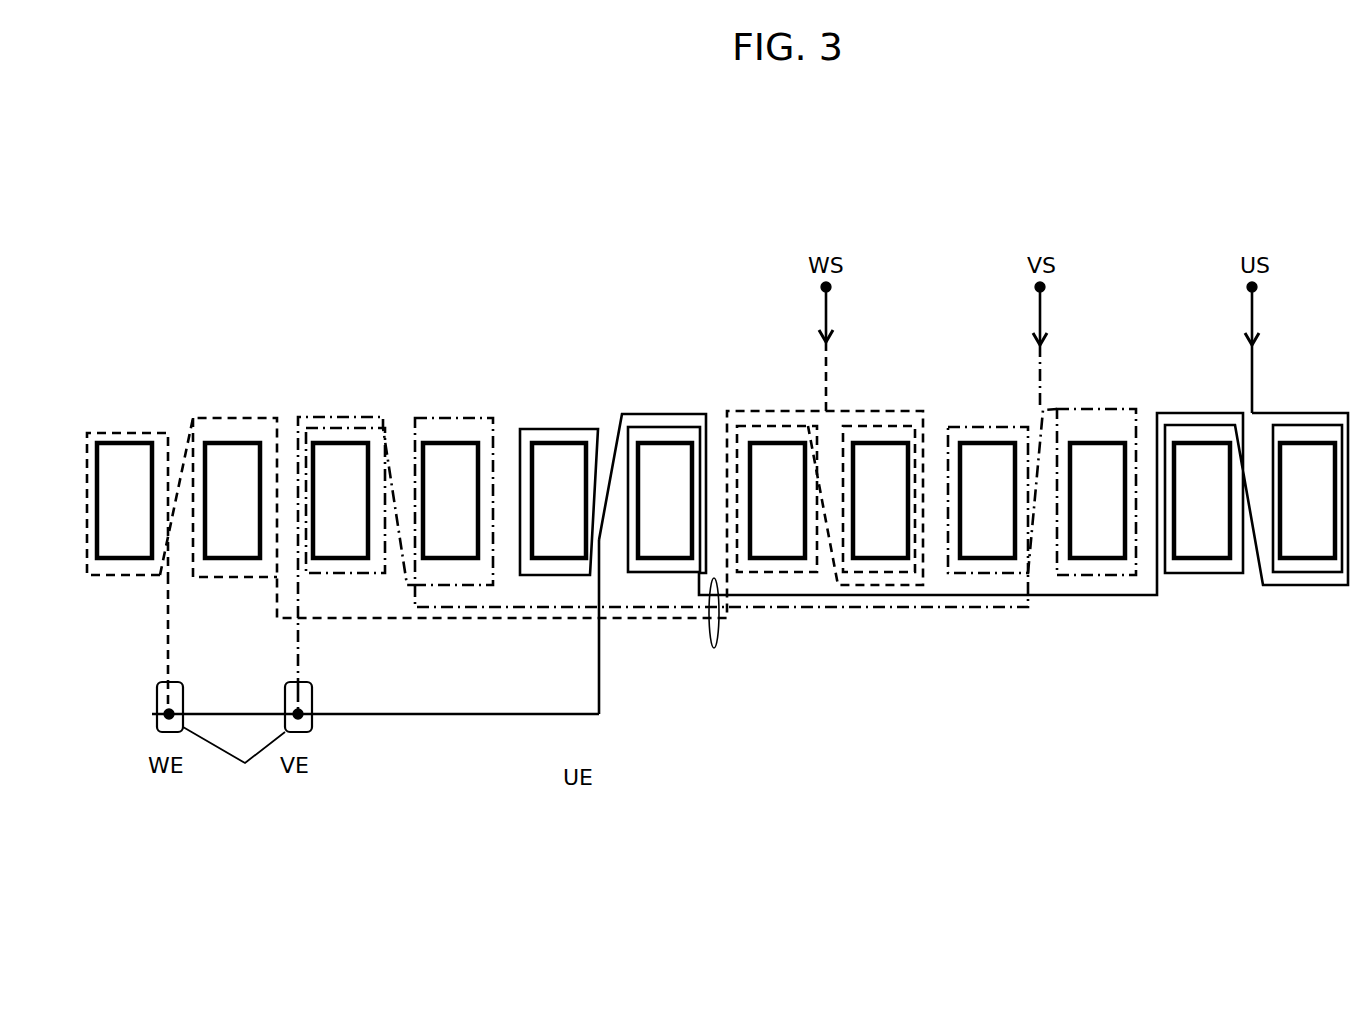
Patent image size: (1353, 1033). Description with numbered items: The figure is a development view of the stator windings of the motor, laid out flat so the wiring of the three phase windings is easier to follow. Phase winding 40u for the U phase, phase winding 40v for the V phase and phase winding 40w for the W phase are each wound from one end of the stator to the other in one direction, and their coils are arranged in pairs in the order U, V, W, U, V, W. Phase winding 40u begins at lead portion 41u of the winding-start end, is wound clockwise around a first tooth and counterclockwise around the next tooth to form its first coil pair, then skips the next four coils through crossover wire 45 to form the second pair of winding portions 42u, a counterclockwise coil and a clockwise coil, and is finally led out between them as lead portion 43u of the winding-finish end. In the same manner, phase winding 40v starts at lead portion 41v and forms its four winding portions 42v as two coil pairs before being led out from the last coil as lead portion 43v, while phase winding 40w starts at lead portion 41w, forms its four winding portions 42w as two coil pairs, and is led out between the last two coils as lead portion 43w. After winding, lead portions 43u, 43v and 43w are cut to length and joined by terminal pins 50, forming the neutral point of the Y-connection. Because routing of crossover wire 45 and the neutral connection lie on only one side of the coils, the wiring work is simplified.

The phase winding 40w is at (823, 310).
The phase winding 40v is at (1037, 310).
The phase winding 40u is at (1250, 310).
The lead portion 41w is at (823, 377).
The lead portion 41v is at (1037, 373).
The lead portion 41u is at (1250, 373).
The winding portions 42w is at (505, 505).
The winding portions 42v is at (717, 519).
The winding portions 42u is at (934, 508).
The lead portion 43w is at (170, 618).
The lead portion 43v is at (298, 642).
The lead portion 43u is at (500, 715).
The crossover wire 45 is at (715, 647).
The terminal pin 50 is at (234, 761).